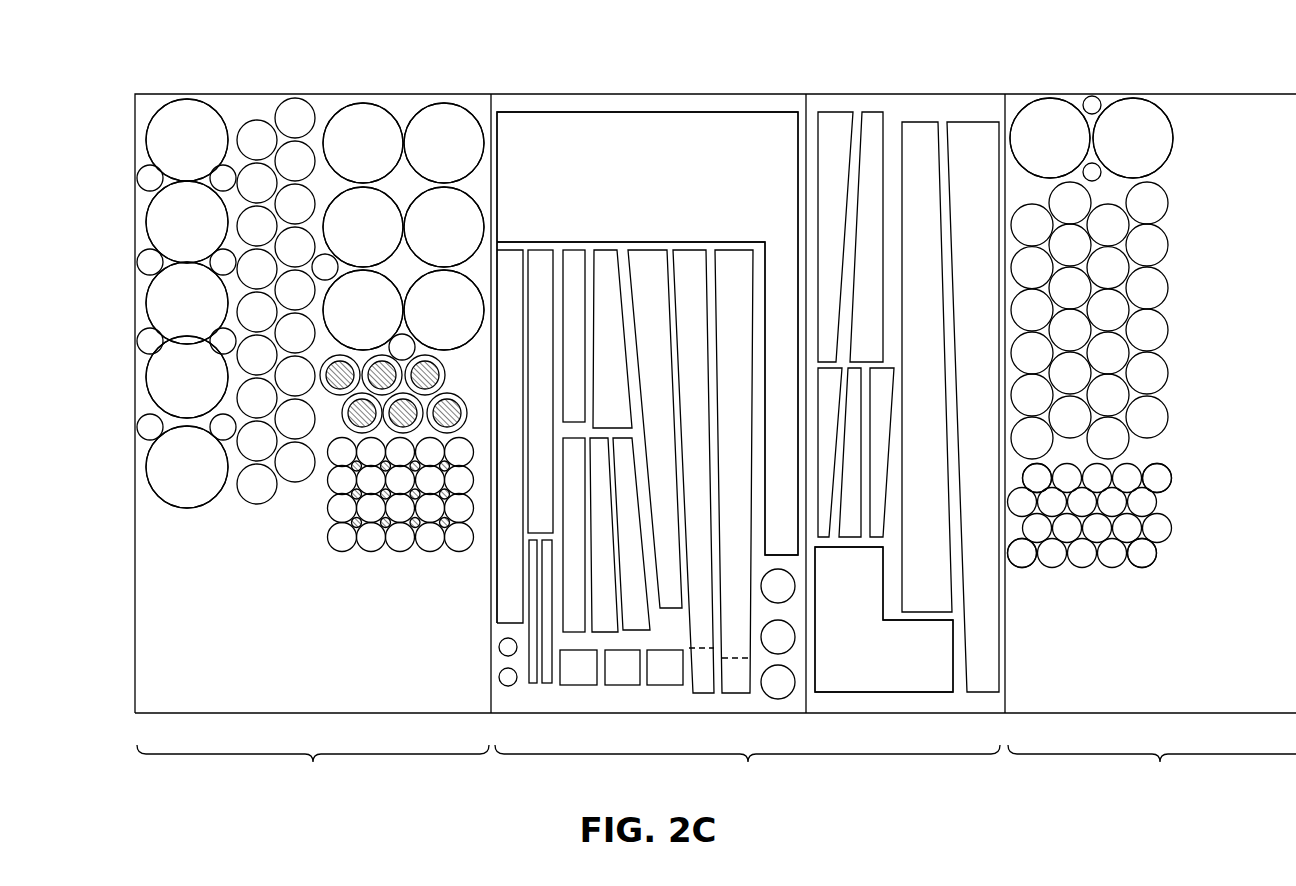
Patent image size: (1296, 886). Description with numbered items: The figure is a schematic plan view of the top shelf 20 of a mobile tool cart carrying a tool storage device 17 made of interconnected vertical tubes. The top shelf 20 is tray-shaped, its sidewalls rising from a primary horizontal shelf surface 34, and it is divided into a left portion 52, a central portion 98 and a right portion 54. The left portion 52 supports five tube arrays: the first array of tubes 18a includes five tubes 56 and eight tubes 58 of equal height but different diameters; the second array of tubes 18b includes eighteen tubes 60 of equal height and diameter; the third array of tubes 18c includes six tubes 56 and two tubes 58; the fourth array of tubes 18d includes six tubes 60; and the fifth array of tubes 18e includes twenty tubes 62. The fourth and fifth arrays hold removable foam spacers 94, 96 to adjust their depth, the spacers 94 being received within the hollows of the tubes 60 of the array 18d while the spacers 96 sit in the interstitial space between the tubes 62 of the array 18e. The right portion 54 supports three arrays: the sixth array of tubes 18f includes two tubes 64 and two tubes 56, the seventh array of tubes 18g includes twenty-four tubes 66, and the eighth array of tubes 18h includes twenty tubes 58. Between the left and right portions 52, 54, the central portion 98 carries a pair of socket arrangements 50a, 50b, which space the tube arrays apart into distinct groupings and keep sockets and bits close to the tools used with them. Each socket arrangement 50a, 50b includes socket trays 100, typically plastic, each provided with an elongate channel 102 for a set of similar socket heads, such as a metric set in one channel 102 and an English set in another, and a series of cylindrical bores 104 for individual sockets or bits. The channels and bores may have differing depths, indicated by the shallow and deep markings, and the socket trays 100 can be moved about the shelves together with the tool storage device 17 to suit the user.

The tool storage device 17 is at (205, 80).
The top shelf 20 is at (146, 92).
The primary horizontal shelf surface 34 is at (158, 650).
The first array of tubes 18a is at (167, 99).
The second array of tubes 18b is at (263, 116).
The third array of tubes 18c is at (372, 106).
The fourth array of tubes 18d is at (280, 442).
The fifth array of tubes 18e is at (399, 519).
The sixth array of tubes 18f is at (1119, 115).
The seventh array of tubes 18g is at (1117, 320).
The eighth array of tubes 18h is at (1173, 528).
The socket arrangement 50a is at (677, 110).
The socket arrangement 50b is at (933, 119).
The left portion 52 is at (313, 767).
The right portion 54 is at (1152, 767).
The tubes 56 is at (176, 154).
The tubes 58 is at (137, 176).
The tubes 60 is at (240, 122).
The tubes 62 is at (342, 552).
The tubes 64 is at (1092, 96).
The tubes 66 is at (1168, 200).
The foam spacers 94 is at (320, 376).
The foam spacers 96 is at (381, 546).
The central portion 98 is at (747, 767).
The socket trays 100 is at (762, 128).
The elongate channel 102 is at (598, 165).
The cylindrical bores 104 is at (529, 702).